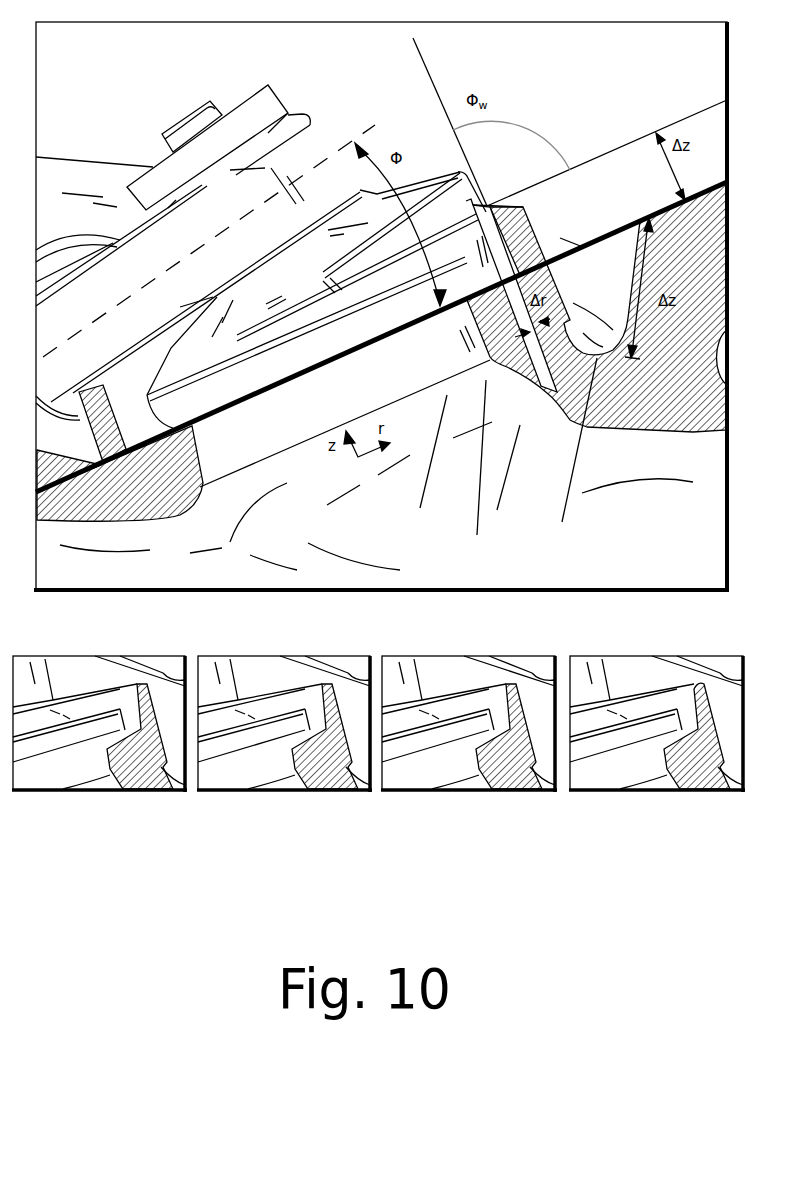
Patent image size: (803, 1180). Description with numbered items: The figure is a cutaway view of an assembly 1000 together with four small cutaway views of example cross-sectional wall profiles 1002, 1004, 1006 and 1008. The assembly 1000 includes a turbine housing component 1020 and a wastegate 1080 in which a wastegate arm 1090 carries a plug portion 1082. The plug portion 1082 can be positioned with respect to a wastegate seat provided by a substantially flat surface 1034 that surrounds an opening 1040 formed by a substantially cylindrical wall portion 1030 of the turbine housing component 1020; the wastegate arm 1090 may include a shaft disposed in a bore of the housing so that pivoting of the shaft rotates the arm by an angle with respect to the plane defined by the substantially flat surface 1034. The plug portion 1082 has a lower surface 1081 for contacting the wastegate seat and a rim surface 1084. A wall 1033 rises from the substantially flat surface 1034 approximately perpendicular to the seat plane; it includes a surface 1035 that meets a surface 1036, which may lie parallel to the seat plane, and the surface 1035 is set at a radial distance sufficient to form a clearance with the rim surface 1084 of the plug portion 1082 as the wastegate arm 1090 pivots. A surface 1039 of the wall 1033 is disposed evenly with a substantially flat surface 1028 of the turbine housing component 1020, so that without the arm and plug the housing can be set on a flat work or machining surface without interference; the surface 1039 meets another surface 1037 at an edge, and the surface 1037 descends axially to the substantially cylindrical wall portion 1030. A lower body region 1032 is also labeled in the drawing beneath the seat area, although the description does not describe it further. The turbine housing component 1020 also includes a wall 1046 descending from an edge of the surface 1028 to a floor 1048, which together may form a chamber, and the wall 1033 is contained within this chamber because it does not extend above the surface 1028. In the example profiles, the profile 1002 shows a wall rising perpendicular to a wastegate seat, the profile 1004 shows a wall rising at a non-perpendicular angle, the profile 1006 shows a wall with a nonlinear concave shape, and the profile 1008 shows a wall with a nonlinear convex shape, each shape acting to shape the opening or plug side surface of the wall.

The assembly 1000 is at (199, 60).
The cross-sectional wall profile 1002 is at (99, 708).
The cross-sectional wall profile 1004 is at (284, 708).
The cross-sectional wall profile 1006 is at (469, 708).
The cross-sectional wall profile 1008 is at (657, 708).
The turbine housing component 1020 is at (634, 402).
The substantially flat surface 1028 is at (697, 215).
The substantially cylindrical wall portion 1030 is at (176, 479).
The lower body 1032 is at (346, 414).
The wall 1033 is at (545, 222).
The substantially flat surface 1034 is at (477, 535).
The surface 1035 is at (368, 312).
The surface 1036 is at (491, 206).
The surface 1037 is at (533, 210).
The surface 1039 is at (513, 207).
The opening 1040 is at (420, 508).
The wall 1046 is at (574, 290).
The floor 1048 is at (562, 522).
The wastegate 1080 is at (131, 98).
The lower surface 1081 is at (323, 318).
The plug portion 1082 is at (309, 293).
The rim surface 1084 is at (205, 385).
The wastegate arm 1090 is at (140, 320).